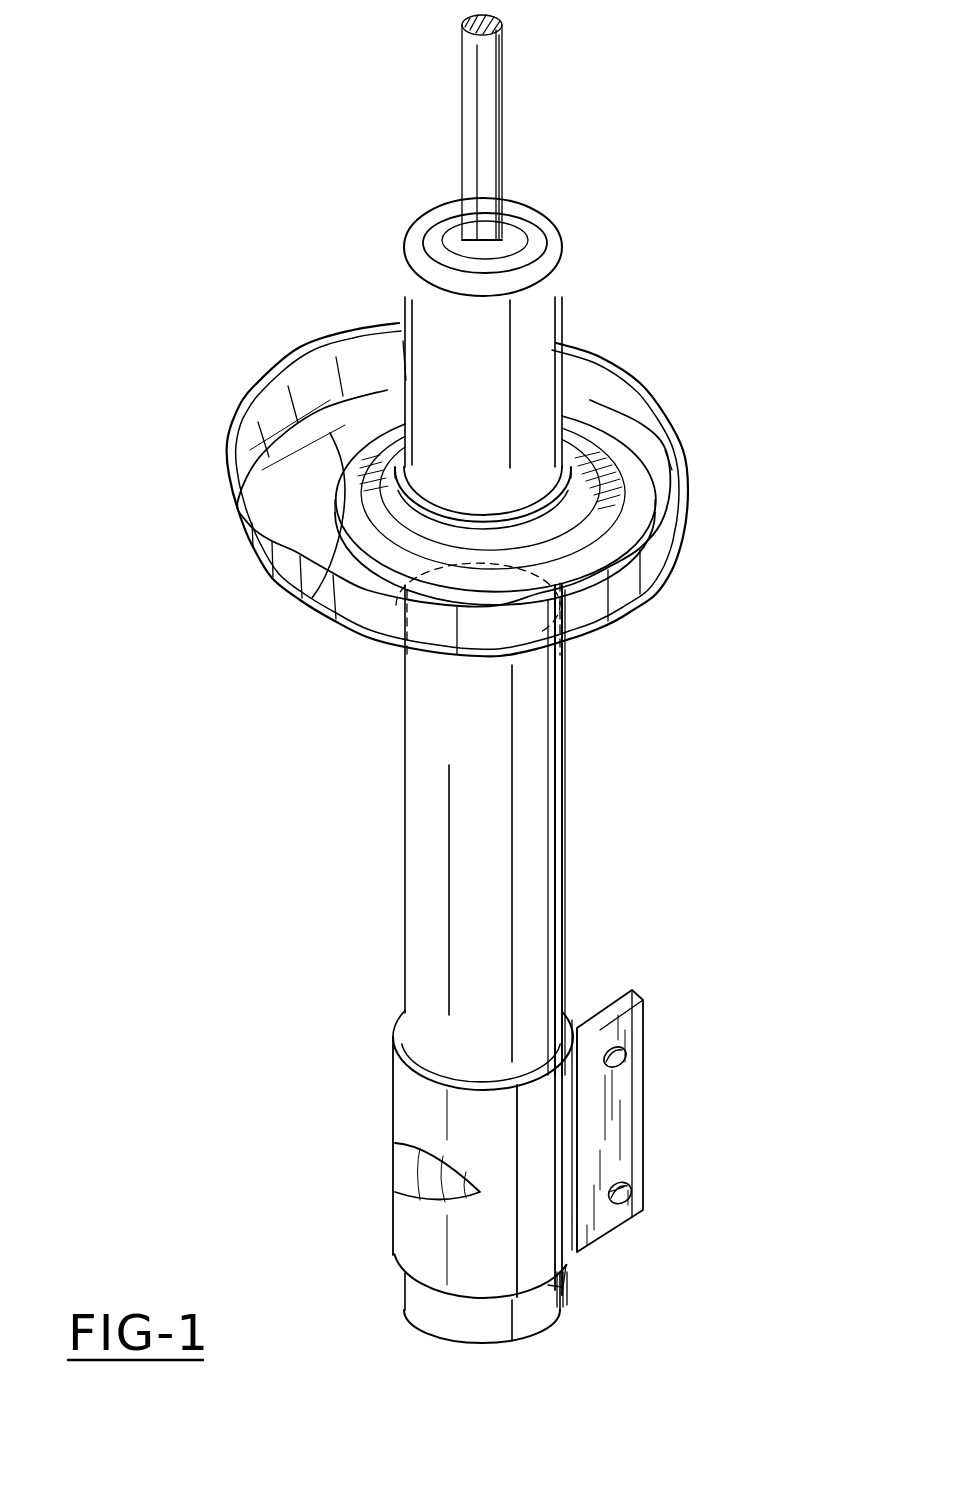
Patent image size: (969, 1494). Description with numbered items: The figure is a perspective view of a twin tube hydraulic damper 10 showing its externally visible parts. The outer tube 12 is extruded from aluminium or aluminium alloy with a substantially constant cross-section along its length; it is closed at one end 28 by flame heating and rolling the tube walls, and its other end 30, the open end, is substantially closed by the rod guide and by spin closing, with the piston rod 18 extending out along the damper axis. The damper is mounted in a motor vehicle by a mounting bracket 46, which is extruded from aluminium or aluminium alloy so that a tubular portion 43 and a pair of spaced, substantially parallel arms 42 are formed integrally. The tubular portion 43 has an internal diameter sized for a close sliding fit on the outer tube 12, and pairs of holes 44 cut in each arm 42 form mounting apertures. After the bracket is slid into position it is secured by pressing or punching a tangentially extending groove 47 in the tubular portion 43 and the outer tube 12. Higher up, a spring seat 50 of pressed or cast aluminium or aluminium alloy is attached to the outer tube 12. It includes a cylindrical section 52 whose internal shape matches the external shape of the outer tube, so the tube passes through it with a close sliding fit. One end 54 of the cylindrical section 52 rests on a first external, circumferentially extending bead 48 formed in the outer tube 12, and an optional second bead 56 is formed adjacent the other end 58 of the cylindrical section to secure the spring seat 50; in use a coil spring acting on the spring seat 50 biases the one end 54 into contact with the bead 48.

The hydraulic damper 10 is at (360, 289).
The outer tube 12 is at (540, 326).
The piston rod 18 is at (487, 121).
The one end of outer tube 28 is at (510, 1340).
The other end of outer tube 30 is at (557, 240).
The arms 42 is at (633, 1118).
The tubular portion 43 is at (403, 1252).
The holes 44 is at (625, 1190).
The mounting bracket 46 is at (660, 1027).
The groove 47 is at (408, 1170).
The first bead 48 is at (566, 671).
The spring seat 50 is at (640, 383).
The cylindrical section 52 is at (680, 527).
The one end of cylindrical section 54 is at (398, 600).
The second bead 56 is at (575, 462).
The other end of cylindrical section 58 is at (312, 598).